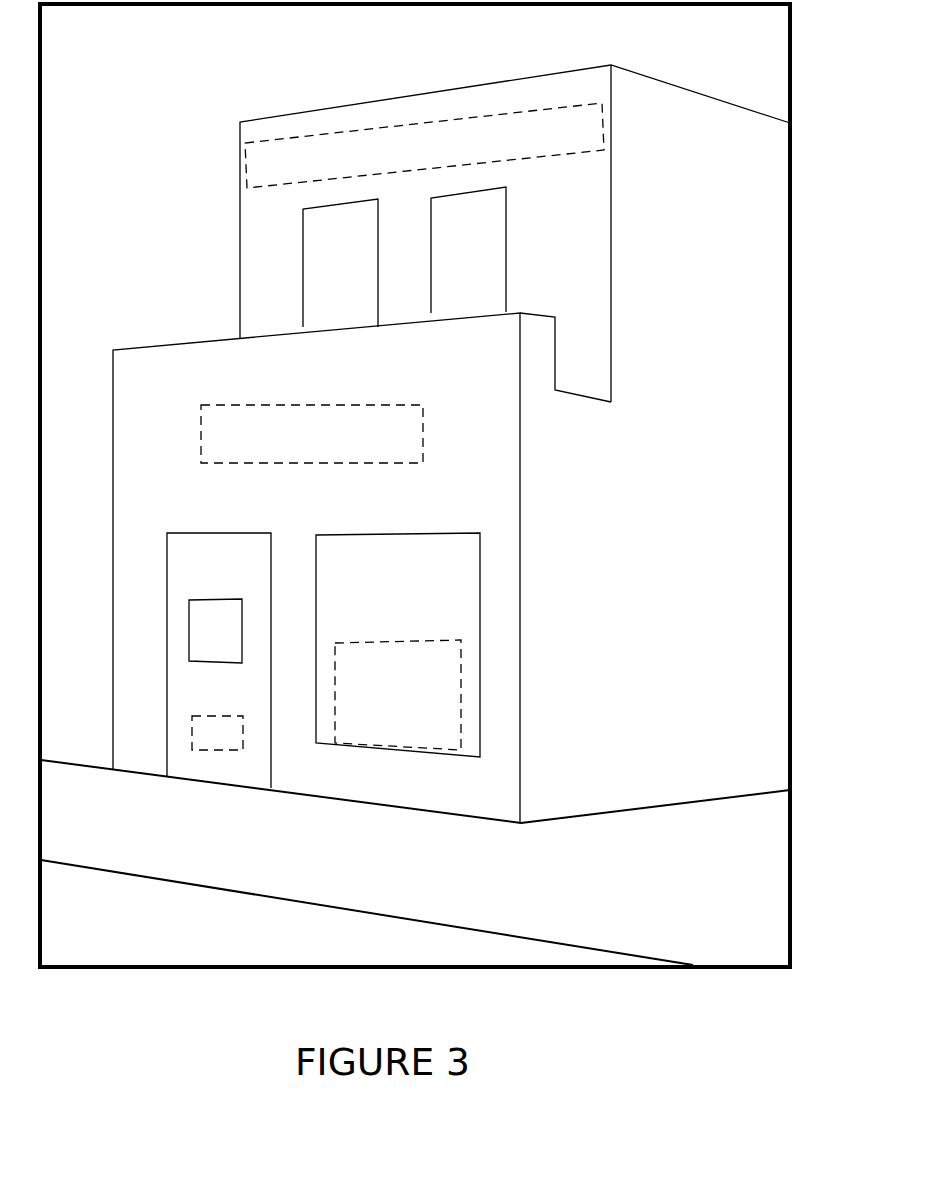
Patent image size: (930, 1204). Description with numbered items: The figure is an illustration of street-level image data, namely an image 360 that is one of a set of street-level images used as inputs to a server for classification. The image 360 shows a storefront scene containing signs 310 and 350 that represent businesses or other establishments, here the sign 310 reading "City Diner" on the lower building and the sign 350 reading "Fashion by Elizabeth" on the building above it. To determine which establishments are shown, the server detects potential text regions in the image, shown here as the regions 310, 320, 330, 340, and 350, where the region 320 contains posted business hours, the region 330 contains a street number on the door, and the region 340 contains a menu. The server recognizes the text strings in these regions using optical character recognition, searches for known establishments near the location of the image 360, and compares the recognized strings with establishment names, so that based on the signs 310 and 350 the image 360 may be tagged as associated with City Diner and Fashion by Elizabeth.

The sign 310 is at (201, 436).
The potential text region 320 is at (393, 750).
The potential text region 330 is at (217, 750).
The potential text region 340 is at (189, 627).
The sign 350 is at (245, 160).
The image 360 is at (806, 169).